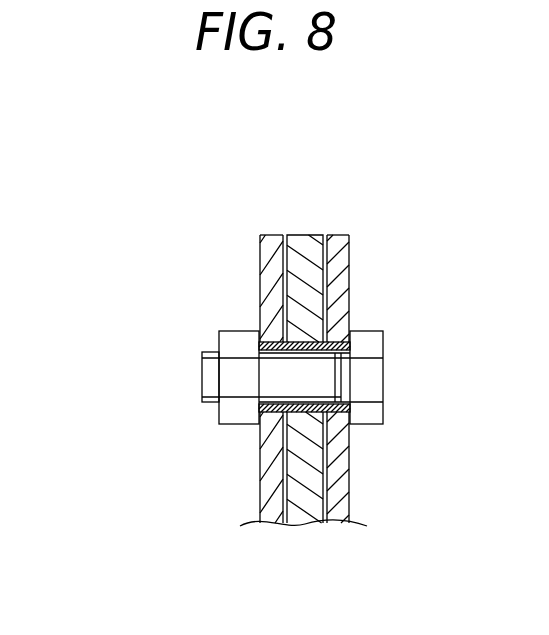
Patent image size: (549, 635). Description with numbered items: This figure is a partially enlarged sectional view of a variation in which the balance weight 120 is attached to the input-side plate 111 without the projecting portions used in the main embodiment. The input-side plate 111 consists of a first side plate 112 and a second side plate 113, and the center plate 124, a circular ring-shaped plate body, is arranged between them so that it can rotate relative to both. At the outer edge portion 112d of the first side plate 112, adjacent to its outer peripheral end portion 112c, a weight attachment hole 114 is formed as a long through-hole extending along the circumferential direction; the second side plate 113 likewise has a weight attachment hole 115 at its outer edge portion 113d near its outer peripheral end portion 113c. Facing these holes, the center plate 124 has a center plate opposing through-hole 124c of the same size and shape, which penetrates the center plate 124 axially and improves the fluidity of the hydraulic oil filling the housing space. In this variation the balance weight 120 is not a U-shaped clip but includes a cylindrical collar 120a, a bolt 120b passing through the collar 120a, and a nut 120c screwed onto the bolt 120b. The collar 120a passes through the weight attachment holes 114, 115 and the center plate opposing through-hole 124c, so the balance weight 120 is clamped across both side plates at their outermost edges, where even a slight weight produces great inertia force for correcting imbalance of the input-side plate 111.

The input-side plate 111 is at (355, 142).
The first side plate 112 is at (332, 235).
The second side plate 113 is at (279, 235).
The weight attachment hole 114 is at (342, 352).
The weight attachment hole 115 is at (258, 343).
The outer peripheral end portion 112c is at (343, 235).
The outer peripheral end portion 113c is at (268, 235).
The outer edge portion 112d is at (350, 433).
The outer edge portion 113d is at (260, 433).
The balance weight 120 is at (113, 305).
The collar 120a is at (293, 364).
The bolt 120b is at (228, 331).
The nut 120c is at (202, 379).
The center plate 124 is at (297, 505).
The center plate opposing through-hole 124c is at (309, 402).